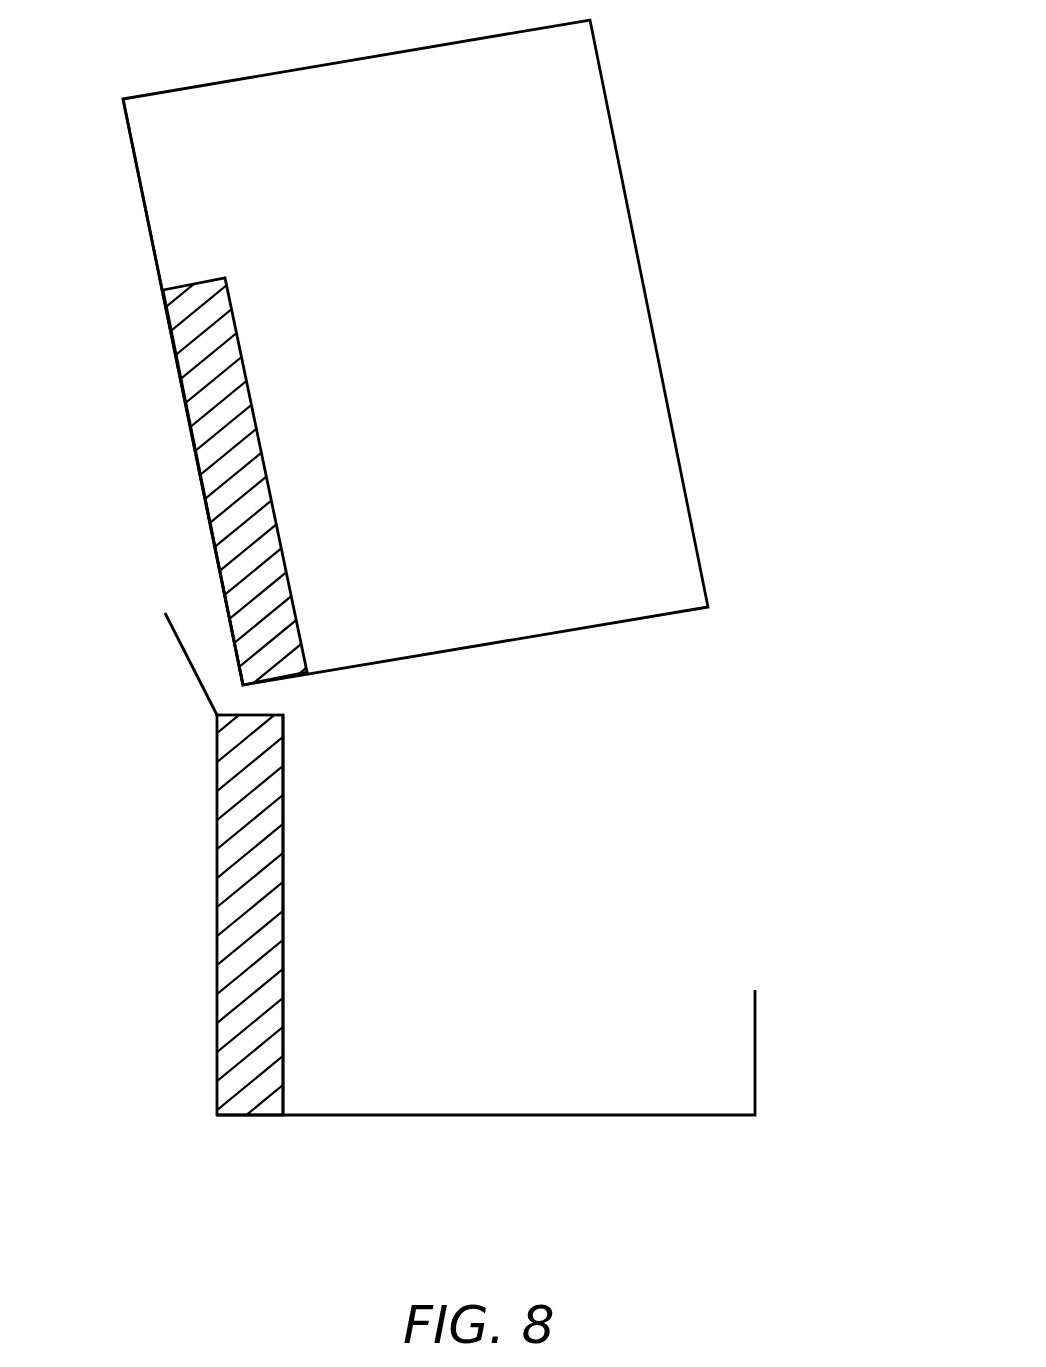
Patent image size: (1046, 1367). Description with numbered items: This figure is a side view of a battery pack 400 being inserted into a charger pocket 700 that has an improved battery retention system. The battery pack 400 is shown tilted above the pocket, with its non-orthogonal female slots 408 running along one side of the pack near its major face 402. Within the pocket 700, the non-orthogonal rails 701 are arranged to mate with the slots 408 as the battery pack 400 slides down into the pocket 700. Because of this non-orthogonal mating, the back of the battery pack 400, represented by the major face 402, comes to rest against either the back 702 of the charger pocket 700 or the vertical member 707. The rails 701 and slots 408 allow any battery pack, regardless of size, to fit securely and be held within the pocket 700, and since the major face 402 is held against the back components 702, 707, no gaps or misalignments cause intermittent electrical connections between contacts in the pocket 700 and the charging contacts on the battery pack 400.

The battery pack 400 is at (448, 343).
The major face 402 is at (153, 254).
The non-orthogonal female slots 408 is at (201, 481).
The charger pocket 700 is at (470, 905).
The non-orthogonal rails 701 is at (285, 800).
The back of the charger pocket 702 is at (187, 660).
The vertical member 707 is at (217, 911).